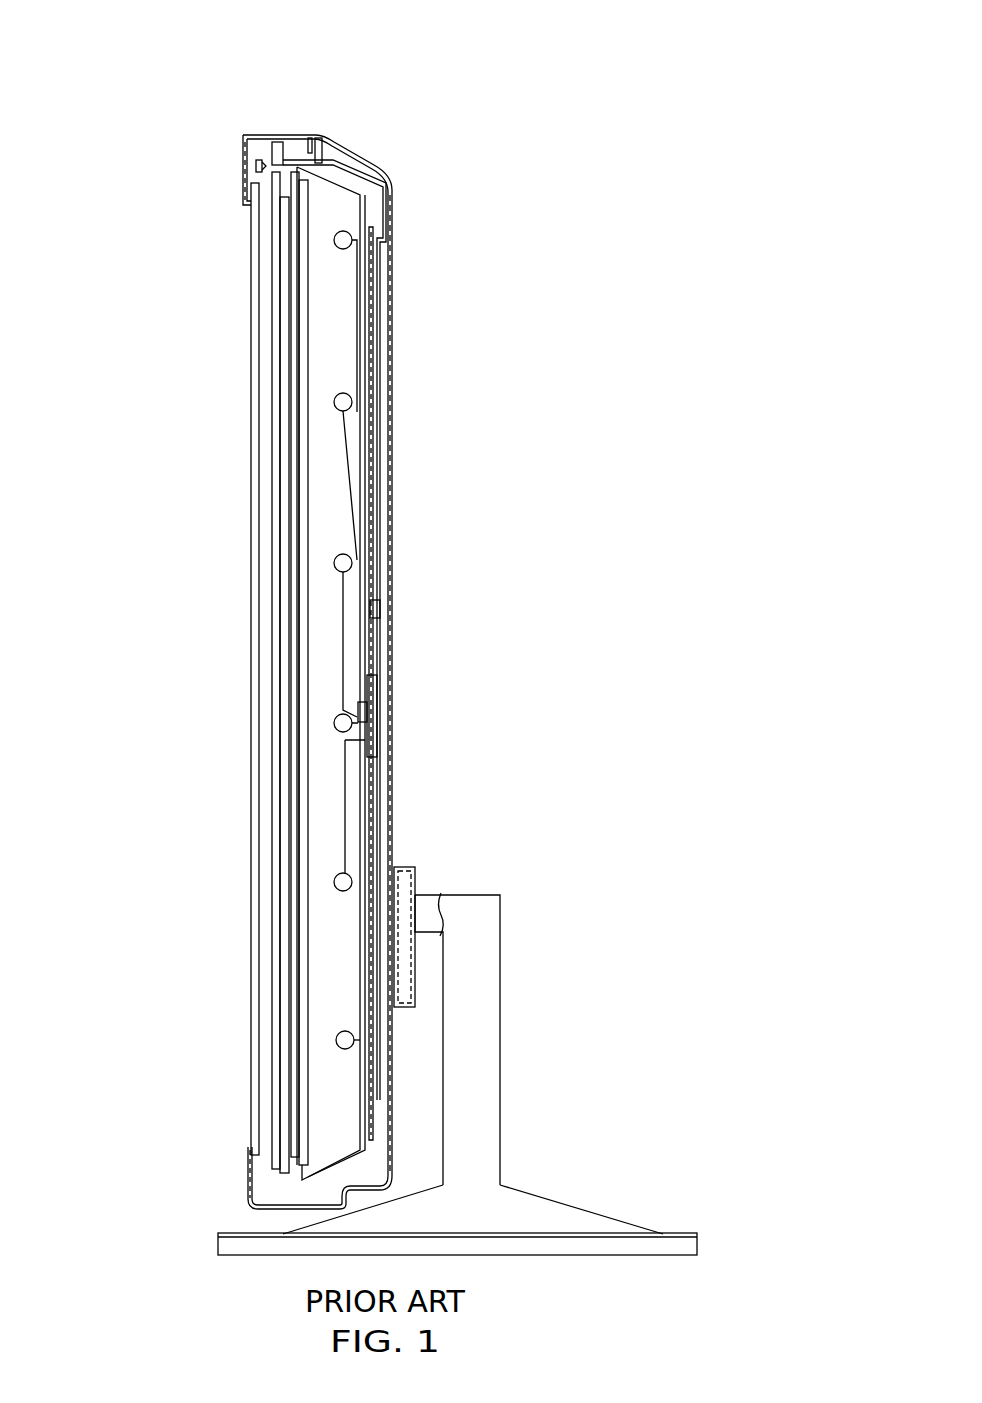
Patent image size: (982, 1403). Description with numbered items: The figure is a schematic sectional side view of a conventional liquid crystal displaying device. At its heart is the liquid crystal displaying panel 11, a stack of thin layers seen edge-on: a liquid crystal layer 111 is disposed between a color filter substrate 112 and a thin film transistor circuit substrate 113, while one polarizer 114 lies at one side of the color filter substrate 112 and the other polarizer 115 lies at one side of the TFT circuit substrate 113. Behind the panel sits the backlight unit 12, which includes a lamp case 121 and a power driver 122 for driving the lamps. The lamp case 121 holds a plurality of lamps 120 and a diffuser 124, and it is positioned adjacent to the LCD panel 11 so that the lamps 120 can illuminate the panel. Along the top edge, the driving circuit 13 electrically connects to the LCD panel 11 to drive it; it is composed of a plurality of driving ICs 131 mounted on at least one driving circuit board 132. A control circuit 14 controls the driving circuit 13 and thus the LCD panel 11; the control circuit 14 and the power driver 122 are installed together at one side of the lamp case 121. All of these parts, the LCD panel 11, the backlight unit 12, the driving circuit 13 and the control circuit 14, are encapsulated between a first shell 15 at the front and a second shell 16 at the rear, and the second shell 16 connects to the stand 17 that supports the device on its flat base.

The liquid crystal displaying panel 11 is at (174, 672).
The liquid crystal layer 111 is at (270, 500).
The color filter substrate 112 is at (262, 552).
The thin film transistor circuit substrate 113 is at (278, 600).
The polarizer 114 is at (258, 657).
The polarizer 115 is at (125, 508).
The backlight unit 12 is at (447, 673).
The lamps 120 is at (347, 245).
The lamp case 121 is at (488, 195).
The power driver 122 is at (372, 727).
The diffuser 124 is at (302, 207).
The driving circuit 13 is at (277, 86).
The driving ICs 131 is at (259, 158).
The driving circuit board 132 is at (301, 109).
The control circuit 14 is at (375, 400).
The first shell 15 is at (243, 188).
The second shell 16 is at (363, 160).
The stand 17 is at (487, 997).